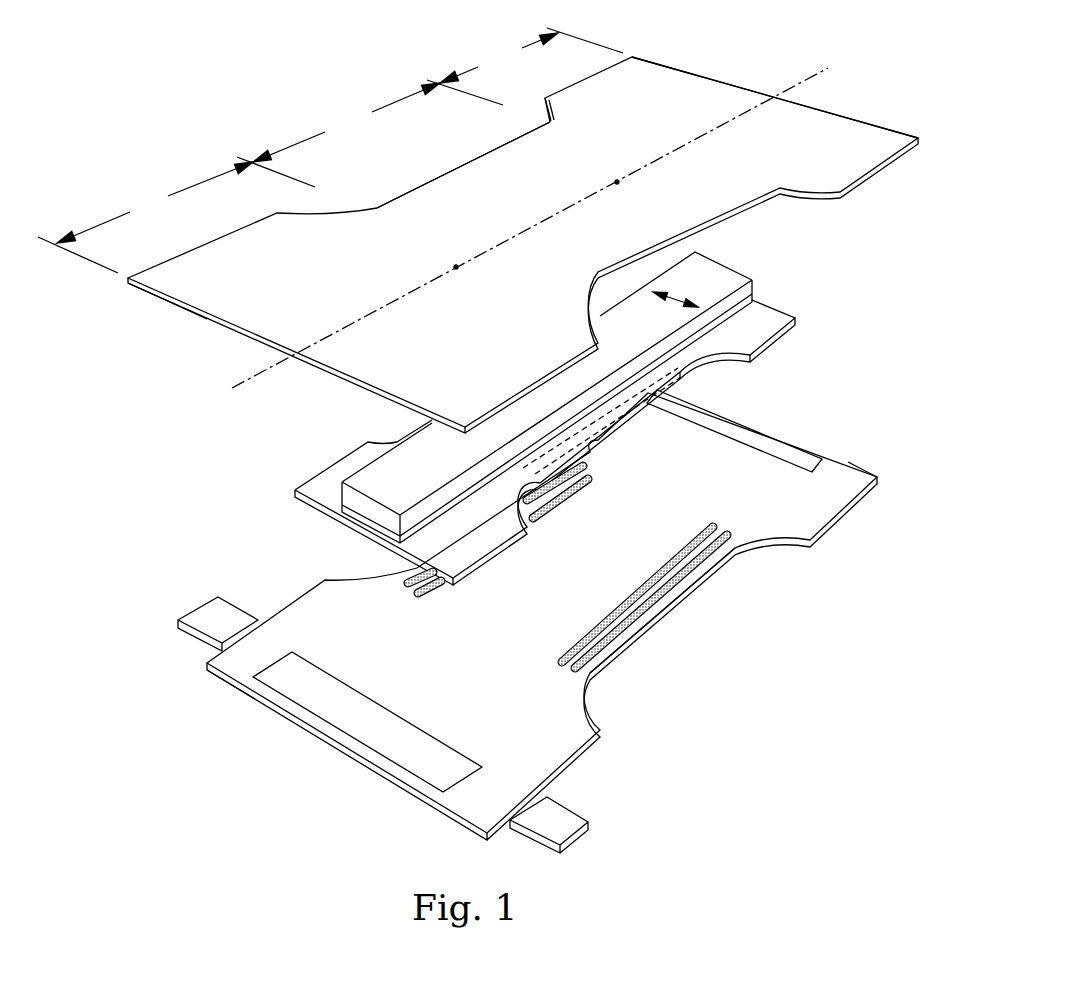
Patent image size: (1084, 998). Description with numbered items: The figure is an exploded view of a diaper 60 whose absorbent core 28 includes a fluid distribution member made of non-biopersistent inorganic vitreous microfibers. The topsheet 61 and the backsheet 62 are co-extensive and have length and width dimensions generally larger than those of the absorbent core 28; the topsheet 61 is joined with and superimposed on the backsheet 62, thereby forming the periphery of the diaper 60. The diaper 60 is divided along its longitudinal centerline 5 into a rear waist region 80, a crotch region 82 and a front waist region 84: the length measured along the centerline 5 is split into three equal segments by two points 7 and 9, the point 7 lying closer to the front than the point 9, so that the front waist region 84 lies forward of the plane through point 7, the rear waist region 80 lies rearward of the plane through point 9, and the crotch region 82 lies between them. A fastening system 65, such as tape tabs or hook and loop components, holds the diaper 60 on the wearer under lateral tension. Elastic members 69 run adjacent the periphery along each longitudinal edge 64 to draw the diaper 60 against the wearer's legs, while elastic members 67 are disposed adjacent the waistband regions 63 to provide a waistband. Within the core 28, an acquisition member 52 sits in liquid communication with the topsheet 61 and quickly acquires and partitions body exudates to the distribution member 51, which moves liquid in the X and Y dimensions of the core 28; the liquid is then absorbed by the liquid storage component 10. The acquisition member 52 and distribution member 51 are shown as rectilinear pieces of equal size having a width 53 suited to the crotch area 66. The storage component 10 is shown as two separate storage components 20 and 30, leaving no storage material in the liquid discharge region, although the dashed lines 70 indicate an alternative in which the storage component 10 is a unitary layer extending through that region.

The longitudinal centerline 5 is at (805, 82).
The point 7 is at (619, 182).
The point 9 is at (457, 268).
The liquid storage component 10 is at (518, 436).
The storage component 20 is at (582, 442).
The absorbent core 28 is at (805, 265).
The storage component 30 is at (500, 386).
The distribution member 51 is at (363, 522).
The acquisition member 52 is at (357, 478).
The width 53 is at (683, 290).
The diaper 60 is at (507, 239).
The topsheet 61 is at (858, 128).
The backsheet 62 is at (518, 436).
The waistband region 63 is at (702, 74).
The longitudinal edge 64 is at (437, 176).
The fastening system 65 is at (212, 612).
The crotch area 66 is at (553, 618).
The elastic members 67 is at (763, 443).
The elastic members 69 is at (678, 568).
The dashed lines 70 is at (597, 432).
The rear waist region 80 is at (176, 215).
The crotch region 82 is at (378, 121).
The front waist region 84 is at (531, 55).